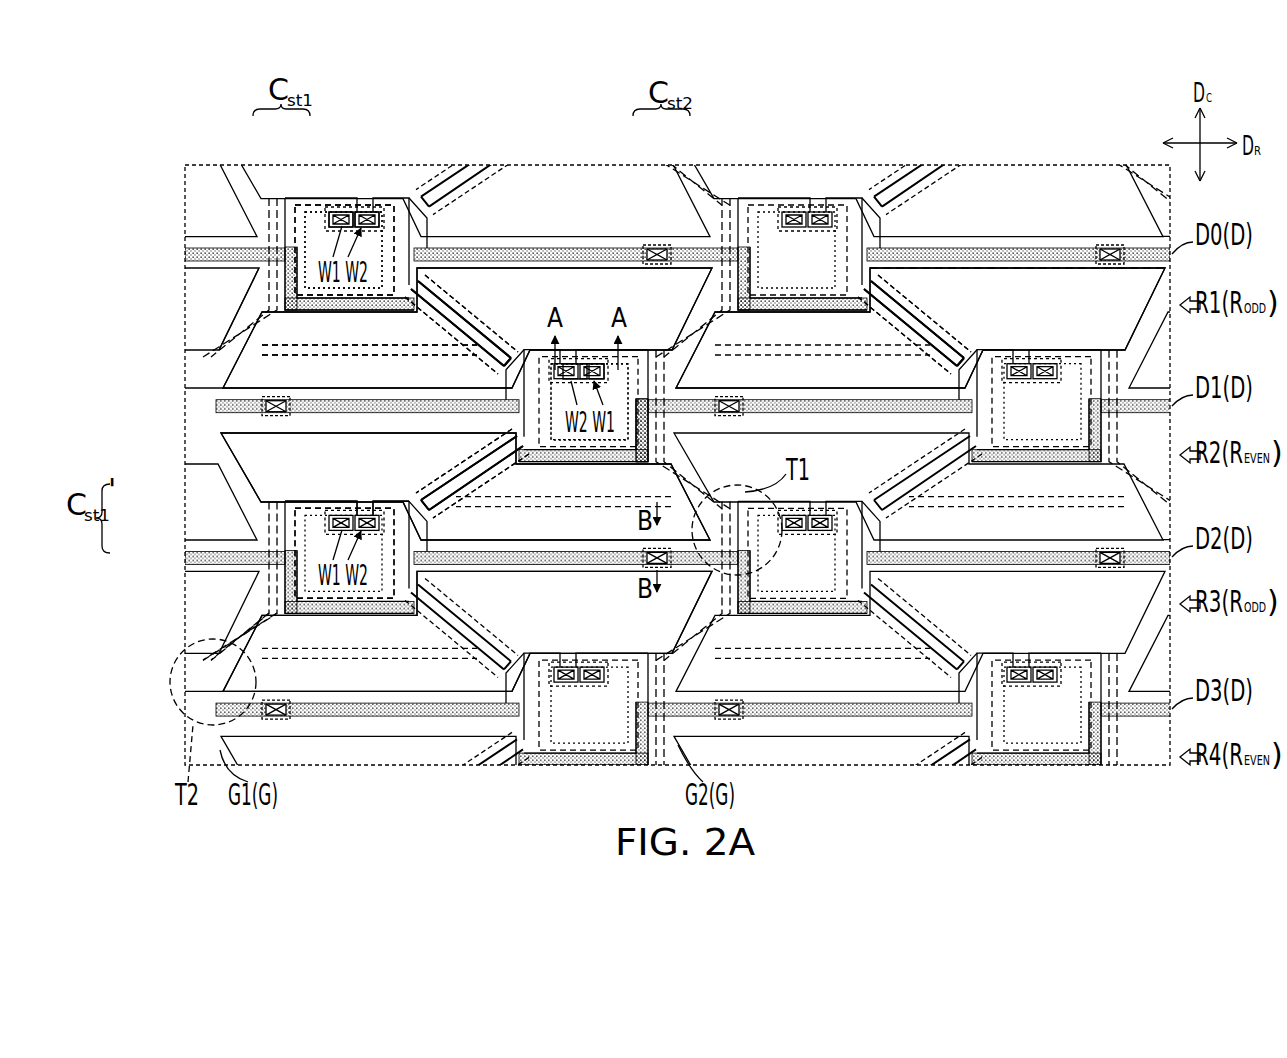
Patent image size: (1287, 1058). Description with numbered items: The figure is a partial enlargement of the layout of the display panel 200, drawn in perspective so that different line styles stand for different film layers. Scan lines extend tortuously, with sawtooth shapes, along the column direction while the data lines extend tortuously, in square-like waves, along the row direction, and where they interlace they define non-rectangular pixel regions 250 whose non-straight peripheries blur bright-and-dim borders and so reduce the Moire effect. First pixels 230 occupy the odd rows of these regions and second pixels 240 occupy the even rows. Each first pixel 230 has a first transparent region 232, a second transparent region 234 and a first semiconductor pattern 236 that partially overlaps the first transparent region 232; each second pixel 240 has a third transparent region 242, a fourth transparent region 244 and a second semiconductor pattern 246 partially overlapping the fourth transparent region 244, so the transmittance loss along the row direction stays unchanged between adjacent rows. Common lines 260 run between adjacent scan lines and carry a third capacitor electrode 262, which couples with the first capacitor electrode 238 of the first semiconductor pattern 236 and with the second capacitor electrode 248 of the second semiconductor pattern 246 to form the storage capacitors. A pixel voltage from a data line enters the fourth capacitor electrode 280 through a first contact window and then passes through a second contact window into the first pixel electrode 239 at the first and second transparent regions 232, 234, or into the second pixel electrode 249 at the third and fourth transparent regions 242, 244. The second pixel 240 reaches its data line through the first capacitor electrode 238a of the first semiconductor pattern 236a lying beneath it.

The display panel 200 is at (914, 148).
The first pixel 230 is at (637, 231).
The first transparent region 232 is at (384, 328).
The second transparent region 234 is at (452, 278).
The first semiconductor pattern 236 is at (420, 350).
The first semiconductor pattern 236a is at (317, 653).
The first capacitor electrode 238 is at (318, 222).
The first capacitor electrode 238a is at (325, 512).
The first pixel electrode 239 is at (227, 340).
The second pixel 240 is at (465, 639).
The third transparent region 242 is at (388, 484).
The fourth transparent region 244 is at (483, 510).
The second semiconductor pattern 246 is at (432, 503).
The second capacitor electrode 248 is at (638, 350).
The second pixel electrode 249 is at (275, 520).
The non-rectangular pixel region 250 is at (1000, 262).
The common line 260 is at (487, 318).
The third capacitor electrode 262 is at (332, 214).
The fourth capacitor electrode 280 is at (355, 222).